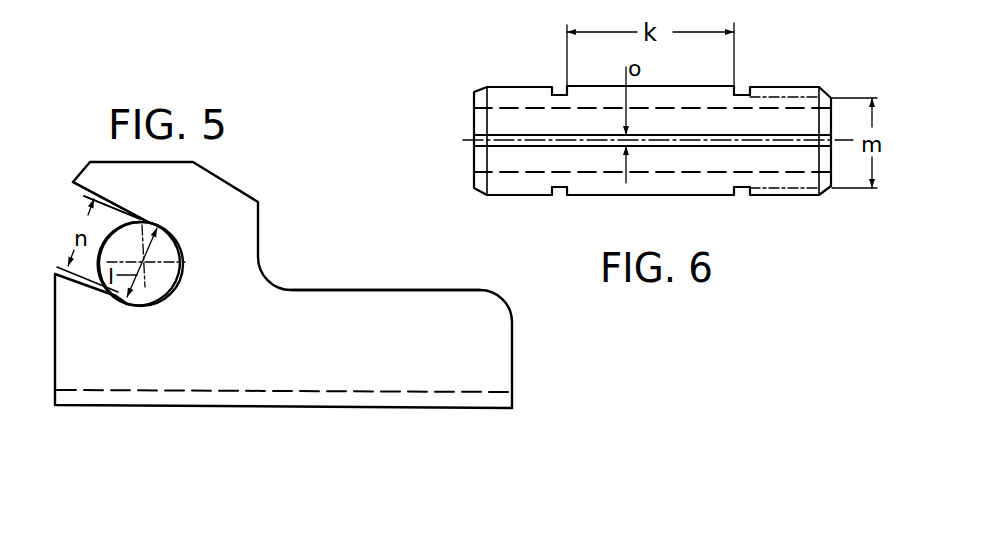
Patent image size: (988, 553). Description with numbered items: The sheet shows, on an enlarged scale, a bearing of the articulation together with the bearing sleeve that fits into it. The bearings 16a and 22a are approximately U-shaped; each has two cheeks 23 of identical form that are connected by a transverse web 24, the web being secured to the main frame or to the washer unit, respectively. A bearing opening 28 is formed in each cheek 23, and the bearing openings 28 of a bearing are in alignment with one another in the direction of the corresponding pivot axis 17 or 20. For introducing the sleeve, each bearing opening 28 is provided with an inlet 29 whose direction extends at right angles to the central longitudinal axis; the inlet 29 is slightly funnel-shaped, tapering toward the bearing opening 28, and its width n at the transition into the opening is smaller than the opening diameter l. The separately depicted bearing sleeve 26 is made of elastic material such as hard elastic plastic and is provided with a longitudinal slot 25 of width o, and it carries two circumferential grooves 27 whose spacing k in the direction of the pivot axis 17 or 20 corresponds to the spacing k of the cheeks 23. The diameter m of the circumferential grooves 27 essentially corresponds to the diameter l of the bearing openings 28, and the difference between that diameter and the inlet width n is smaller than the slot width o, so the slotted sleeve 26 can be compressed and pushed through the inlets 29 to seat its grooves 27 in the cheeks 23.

In FIG. 5, the inlet 29 is at (84, 187).
In FIG. 5, the bearing opening 28 is at (163, 246).
In FIG. 5, the pivot axis 20 is at (189, 267).
In FIG. 5, the pivot axis 17 is at (143, 264).
In FIG. 5, the cheek 23 is at (325, 313).
In FIG. 5, the bearing 22a is at (283, 285).
In FIG. 5, the bearing 16a is at (382, 288).
In FIG. 5, the transverse web 24 is at (304, 395).
In FIG. 6, the bearing sleeve 26 is at (515, 83).
In FIG. 6, the longitudinal slot 25 is at (493, 142).
In FIG. 6, the circumferential groove 27 is at (559, 188).